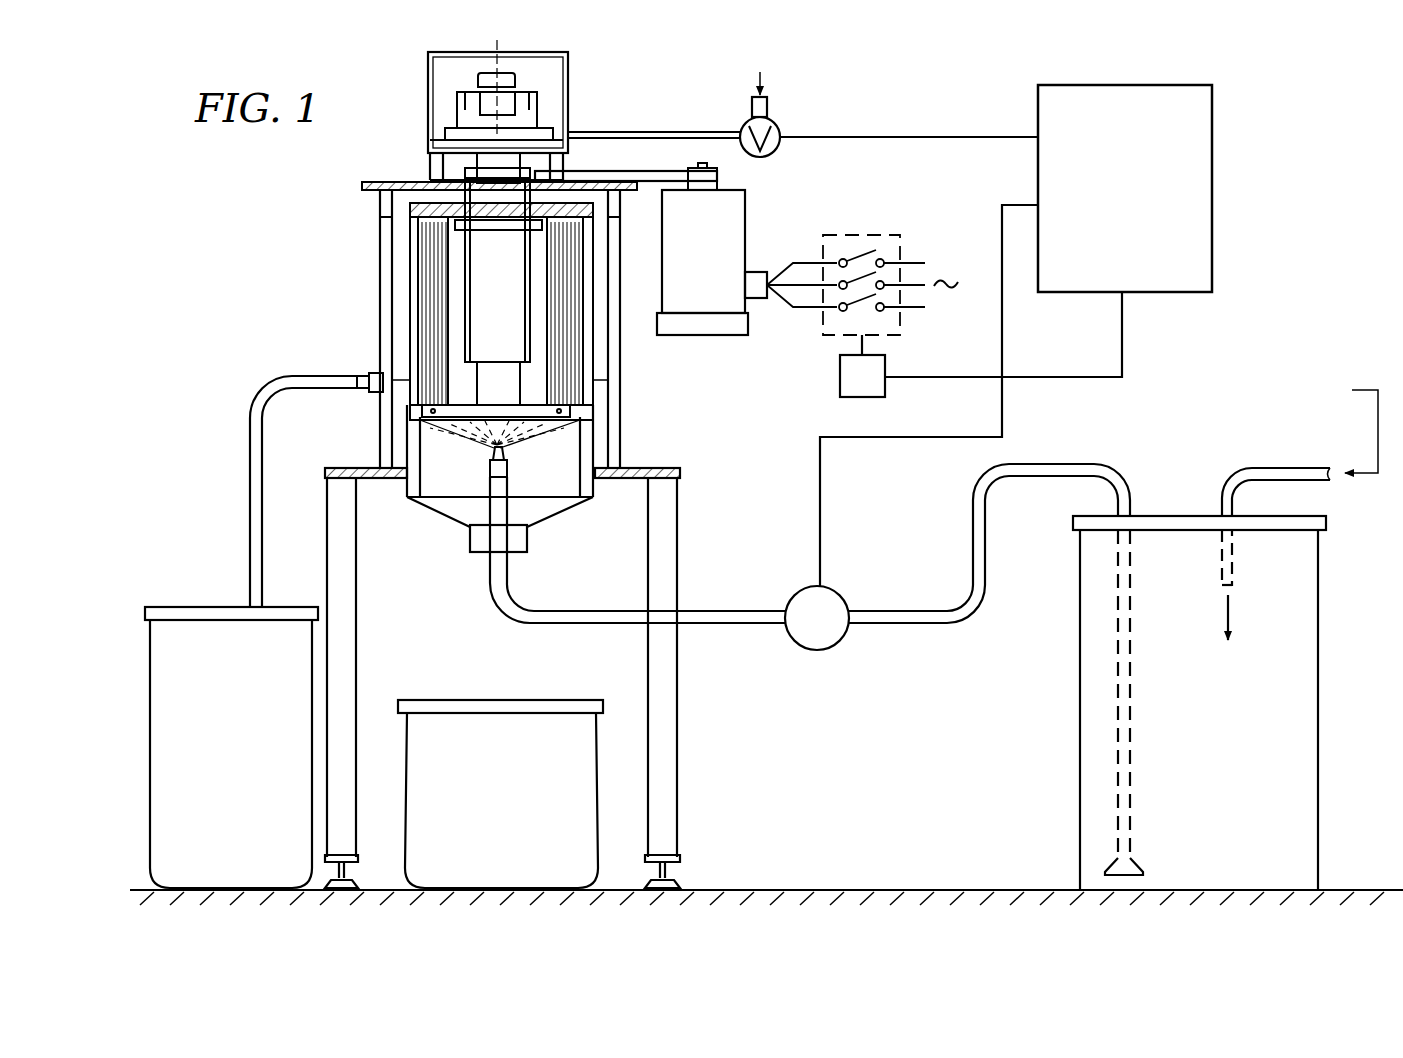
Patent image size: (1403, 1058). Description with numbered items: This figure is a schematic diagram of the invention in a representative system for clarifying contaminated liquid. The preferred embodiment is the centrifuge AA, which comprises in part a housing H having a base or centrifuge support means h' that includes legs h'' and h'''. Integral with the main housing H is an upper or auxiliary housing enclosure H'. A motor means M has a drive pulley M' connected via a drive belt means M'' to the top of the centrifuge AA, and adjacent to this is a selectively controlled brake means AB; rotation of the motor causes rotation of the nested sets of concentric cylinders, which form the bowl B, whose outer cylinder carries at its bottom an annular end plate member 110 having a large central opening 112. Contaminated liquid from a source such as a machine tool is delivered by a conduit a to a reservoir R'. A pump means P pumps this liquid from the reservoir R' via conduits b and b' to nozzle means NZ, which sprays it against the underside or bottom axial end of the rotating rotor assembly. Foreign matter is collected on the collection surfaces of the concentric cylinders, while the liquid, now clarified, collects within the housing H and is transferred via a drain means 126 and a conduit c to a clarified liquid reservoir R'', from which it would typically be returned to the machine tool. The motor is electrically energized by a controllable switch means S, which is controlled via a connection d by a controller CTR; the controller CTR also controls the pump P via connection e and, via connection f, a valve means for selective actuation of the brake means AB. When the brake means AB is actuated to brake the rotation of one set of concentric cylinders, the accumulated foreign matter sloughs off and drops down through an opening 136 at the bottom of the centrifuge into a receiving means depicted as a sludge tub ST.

The brake means AB is at (548, 98).
The auxiliary housing enclosure H' is at (444, 116).
The centrifuge AA is at (380, 290).
The housing H is at (551, 311).
The drain means 126 is at (375, 372).
The conduit c is at (245, 392).
The annular end plate member 110 is at (428, 440).
The central opening 112 is at (463, 448).
The nozzle means NZ is at (531, 467).
The opening 136 is at (528, 542).
The conduit b' is at (733, 589).
The centrifuge support means h' is at (523, 452).
The leg h'' is at (639, 683).
The leg h''' is at (379, 683).
The clarified liquid reservoir R'' is at (231, 714).
The sludge tub ST is at (512, 840).
The pump means P is at (817, 618).
The conduit b is at (989, 524).
The reservoir R' is at (1233, 703).
The conduit a is at (1288, 466).
The motor means M is at (747, 262).
The drive pulley M' is at (741, 178).
The drive belt means M'' is at (626, 160).
The bowl B is at (804, 300).
The switch means S is at (862, 366).
The connection d is at (1044, 376).
The controller CTR is at (1152, 252).
The connection e is at (908, 437).
The connection f is at (882, 136).